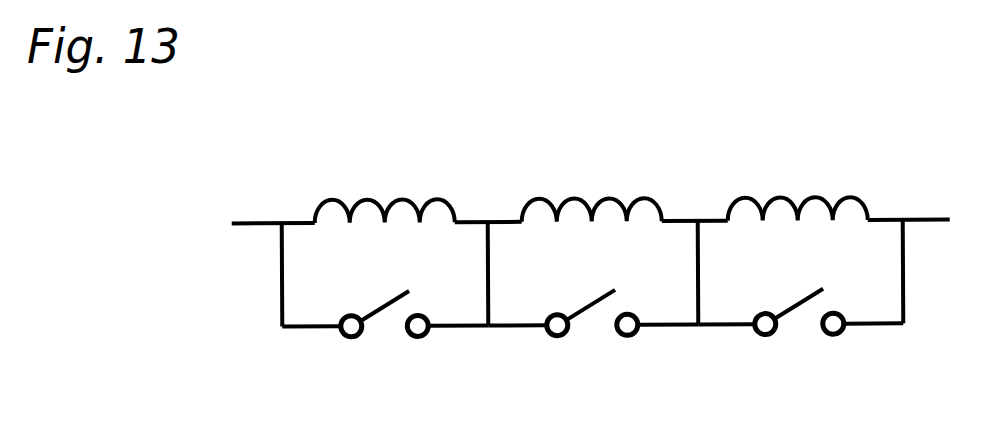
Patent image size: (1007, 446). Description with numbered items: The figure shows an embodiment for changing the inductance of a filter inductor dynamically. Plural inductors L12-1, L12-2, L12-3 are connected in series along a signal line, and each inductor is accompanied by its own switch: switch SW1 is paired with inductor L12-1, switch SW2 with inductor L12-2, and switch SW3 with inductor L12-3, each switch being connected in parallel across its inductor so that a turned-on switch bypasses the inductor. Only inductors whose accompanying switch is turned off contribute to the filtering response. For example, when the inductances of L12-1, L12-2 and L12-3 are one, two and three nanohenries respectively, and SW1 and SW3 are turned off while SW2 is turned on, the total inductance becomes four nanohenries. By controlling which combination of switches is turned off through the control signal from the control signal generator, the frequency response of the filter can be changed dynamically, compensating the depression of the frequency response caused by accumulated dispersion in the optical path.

The inductor L12-1 is at (384, 167).
The inductor L12-2 is at (591, 166).
The inductor L12-3 is at (797, 165).
The switch SW1 is at (385, 360).
The switch SW2 is at (593, 358).
The switch SW3 is at (801, 354).